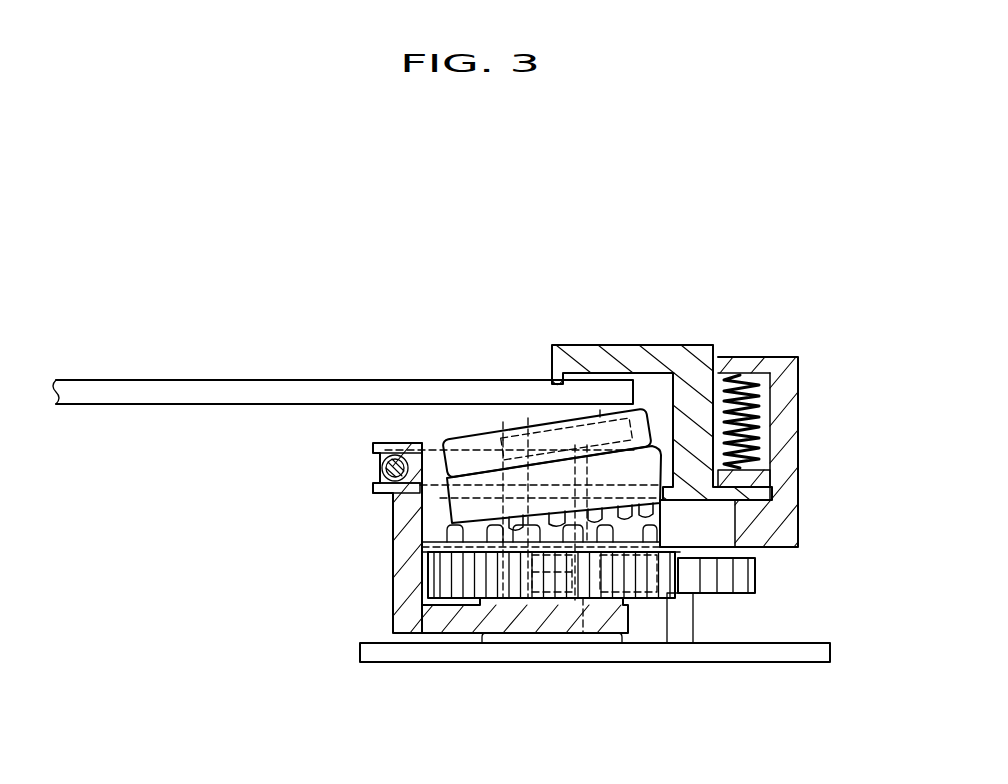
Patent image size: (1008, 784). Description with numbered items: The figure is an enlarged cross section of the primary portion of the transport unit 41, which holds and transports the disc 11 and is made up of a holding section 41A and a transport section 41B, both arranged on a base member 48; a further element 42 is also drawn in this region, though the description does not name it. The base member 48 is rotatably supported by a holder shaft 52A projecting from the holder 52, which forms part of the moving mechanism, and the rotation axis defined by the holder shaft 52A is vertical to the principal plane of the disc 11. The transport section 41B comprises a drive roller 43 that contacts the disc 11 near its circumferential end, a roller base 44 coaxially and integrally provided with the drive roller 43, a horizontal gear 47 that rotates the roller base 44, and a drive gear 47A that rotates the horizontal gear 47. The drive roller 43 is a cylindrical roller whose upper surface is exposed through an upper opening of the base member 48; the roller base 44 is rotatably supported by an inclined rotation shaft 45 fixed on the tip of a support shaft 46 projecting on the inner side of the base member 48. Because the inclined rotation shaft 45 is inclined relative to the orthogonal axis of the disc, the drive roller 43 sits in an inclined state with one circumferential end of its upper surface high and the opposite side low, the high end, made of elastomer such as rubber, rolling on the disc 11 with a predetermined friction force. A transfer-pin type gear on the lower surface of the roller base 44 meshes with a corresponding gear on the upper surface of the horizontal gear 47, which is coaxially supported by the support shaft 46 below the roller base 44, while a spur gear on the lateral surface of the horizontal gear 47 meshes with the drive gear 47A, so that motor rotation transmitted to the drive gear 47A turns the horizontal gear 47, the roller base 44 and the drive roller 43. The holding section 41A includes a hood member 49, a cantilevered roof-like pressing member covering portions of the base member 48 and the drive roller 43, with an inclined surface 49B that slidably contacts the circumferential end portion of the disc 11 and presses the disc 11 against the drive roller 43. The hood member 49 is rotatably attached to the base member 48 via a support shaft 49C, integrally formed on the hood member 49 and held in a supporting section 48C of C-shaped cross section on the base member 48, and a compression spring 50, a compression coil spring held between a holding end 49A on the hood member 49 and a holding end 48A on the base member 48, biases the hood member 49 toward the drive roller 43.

The disc 11 is at (163, 380).
The transport unit 41 is at (684, 330).
The holding section 41A is at (722, 332).
The transport section 41B is at (416, 433).
The rotor 42 is at (614, 405).
The drive roller 43 is at (444, 440).
The roller base 44 is at (455, 505).
The inclined rotation shaft 45 is at (511, 430).
The support shaft 46 is at (583, 633).
The horizontal gear 47 is at (438, 576).
The drive gear 47A is at (750, 575).
The base member 48 is at (793, 523).
The holding end 48A is at (757, 363).
The supporting section 48C is at (373, 488).
The hood member 49 is at (590, 345).
The holding end 49A is at (760, 477).
The inclined surface 49B is at (552, 380).
The support shaft 49C is at (381, 470).
The compression spring 50 is at (757, 405).
The holder 52 is at (428, 658).
The holder shaft 52A is at (543, 617).